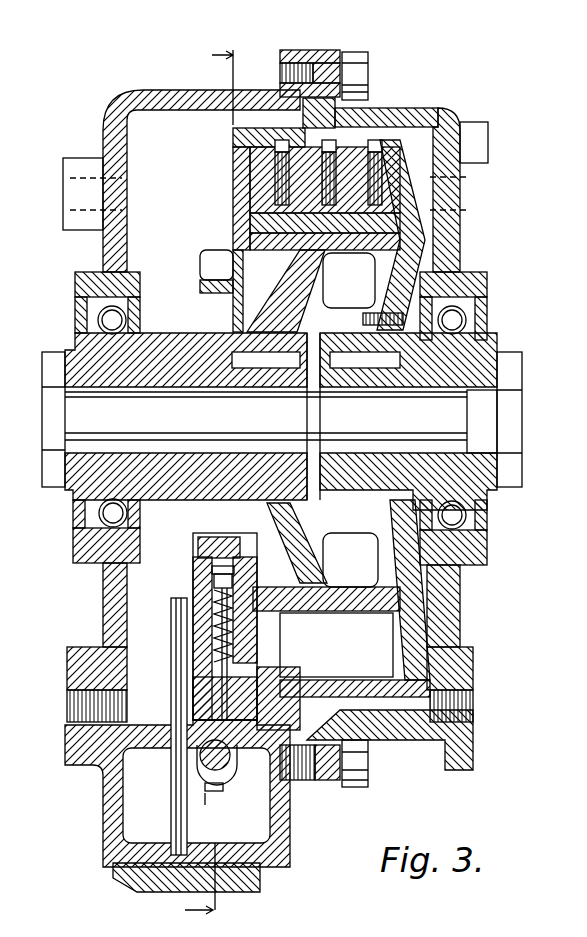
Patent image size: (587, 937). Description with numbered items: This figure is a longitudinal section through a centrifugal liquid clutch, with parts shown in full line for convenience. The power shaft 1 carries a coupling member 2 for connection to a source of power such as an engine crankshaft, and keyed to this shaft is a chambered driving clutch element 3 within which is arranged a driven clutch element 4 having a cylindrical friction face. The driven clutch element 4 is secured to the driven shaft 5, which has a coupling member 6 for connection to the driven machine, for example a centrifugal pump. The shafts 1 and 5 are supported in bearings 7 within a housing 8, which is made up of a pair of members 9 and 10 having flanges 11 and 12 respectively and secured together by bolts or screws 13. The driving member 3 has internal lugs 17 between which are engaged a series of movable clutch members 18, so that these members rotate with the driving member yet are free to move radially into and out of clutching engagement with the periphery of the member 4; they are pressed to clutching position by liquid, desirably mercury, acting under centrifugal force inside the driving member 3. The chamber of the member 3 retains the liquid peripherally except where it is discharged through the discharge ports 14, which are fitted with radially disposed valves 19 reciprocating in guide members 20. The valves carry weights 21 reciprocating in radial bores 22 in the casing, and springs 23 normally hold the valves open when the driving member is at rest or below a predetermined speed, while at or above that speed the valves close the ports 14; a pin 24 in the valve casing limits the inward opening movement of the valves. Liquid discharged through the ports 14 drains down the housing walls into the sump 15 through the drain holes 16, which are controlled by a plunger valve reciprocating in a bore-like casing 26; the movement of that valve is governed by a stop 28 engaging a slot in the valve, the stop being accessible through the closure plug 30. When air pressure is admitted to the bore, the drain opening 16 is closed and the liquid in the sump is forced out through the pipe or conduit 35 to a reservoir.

The power shaft 1 is at (473, 367).
The coupling member 2 is at (520, 368).
The driving clutch element 3 is at (417, 227).
The driven clutch element 4 is at (290, 275).
The driven shaft 5 is at (178, 492).
The coupling member 6 is at (50, 465).
The bearings 7 is at (85, 300).
The housing 8 is at (422, 116).
The housing member 9 is at (377, 110).
The housing member 10 is at (168, 90).
The flange 11 is at (320, 50).
The flange 12 is at (283, 50).
The bolts or screws 13 is at (332, 70).
The discharge ports 14 is at (210, 703).
The sump 15 is at (130, 805).
The drain holes 16 is at (200, 805).
The internal lugs 17 is at (257, 172).
The movable clutch members 18 is at (380, 645).
The valves 19 is at (210, 665).
The guide members 20 is at (210, 633).
The weights 21 is at (210, 583).
The radial bores 22 is at (205, 570).
The springs 23 is at (240, 590).
The pin 24 is at (218, 555).
The bore-like casing 26 is at (230, 767).
The stop 28 is at (227, 787).
The closure plug 30 is at (238, 882).
The pipe or conduit 35 is at (170, 775).